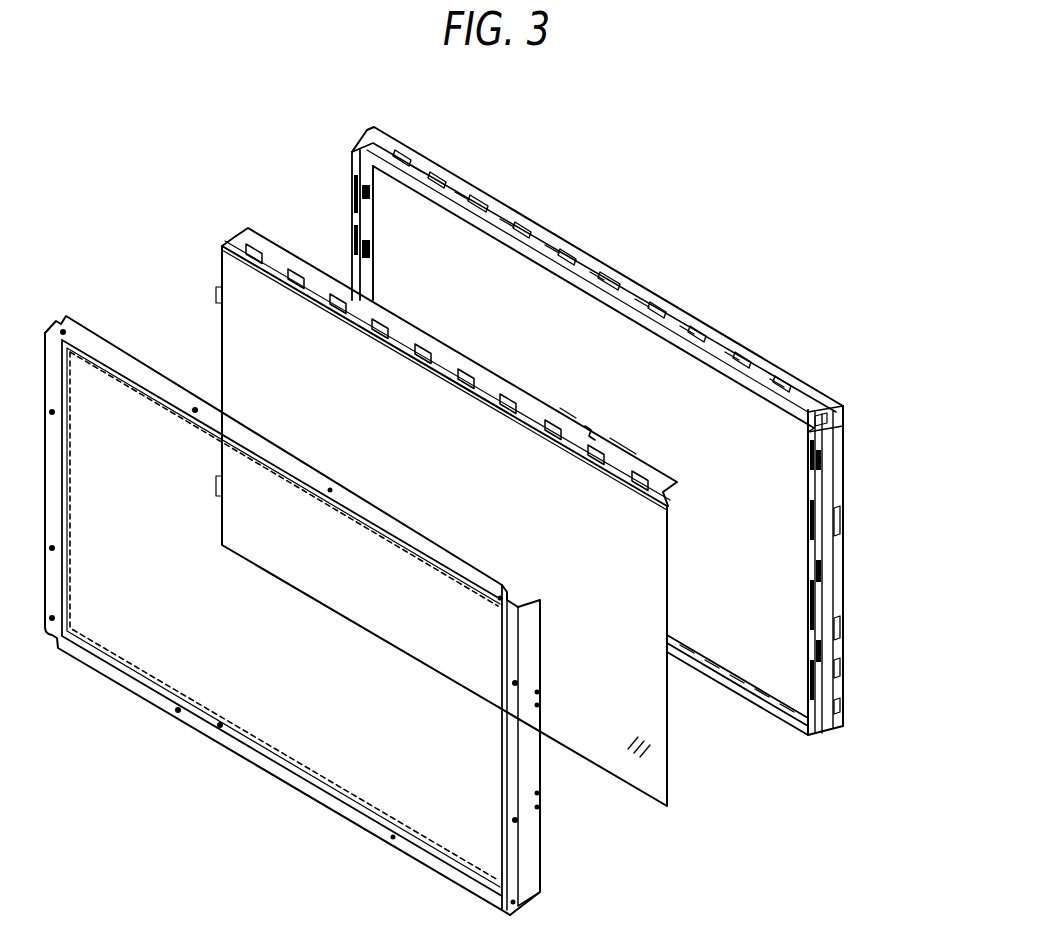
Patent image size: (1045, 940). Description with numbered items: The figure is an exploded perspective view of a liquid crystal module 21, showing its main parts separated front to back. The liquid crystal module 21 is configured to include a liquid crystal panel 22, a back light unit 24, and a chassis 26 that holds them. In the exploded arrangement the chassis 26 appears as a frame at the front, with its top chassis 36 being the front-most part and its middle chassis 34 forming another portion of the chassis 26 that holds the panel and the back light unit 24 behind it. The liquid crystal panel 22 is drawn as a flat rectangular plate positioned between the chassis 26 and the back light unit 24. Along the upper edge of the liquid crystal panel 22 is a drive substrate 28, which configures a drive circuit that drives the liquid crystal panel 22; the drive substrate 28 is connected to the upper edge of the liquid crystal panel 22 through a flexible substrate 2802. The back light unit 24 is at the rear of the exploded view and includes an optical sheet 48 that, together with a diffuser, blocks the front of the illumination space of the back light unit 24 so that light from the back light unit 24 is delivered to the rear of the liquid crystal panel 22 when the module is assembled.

The liquid crystal module 21 is at (718, 202).
The liquid crystal panel 22 is at (677, 765).
The back light unit 24 is at (855, 683).
The chassis 26 is at (555, 885).
The drive substrate 28 is at (282, 252).
The flexible substrate 2802 is at (290, 262).
The middle chassis 34 is at (833, 584).
The top chassis 36 is at (534, 840).
The optical sheet 48 is at (777, 499).